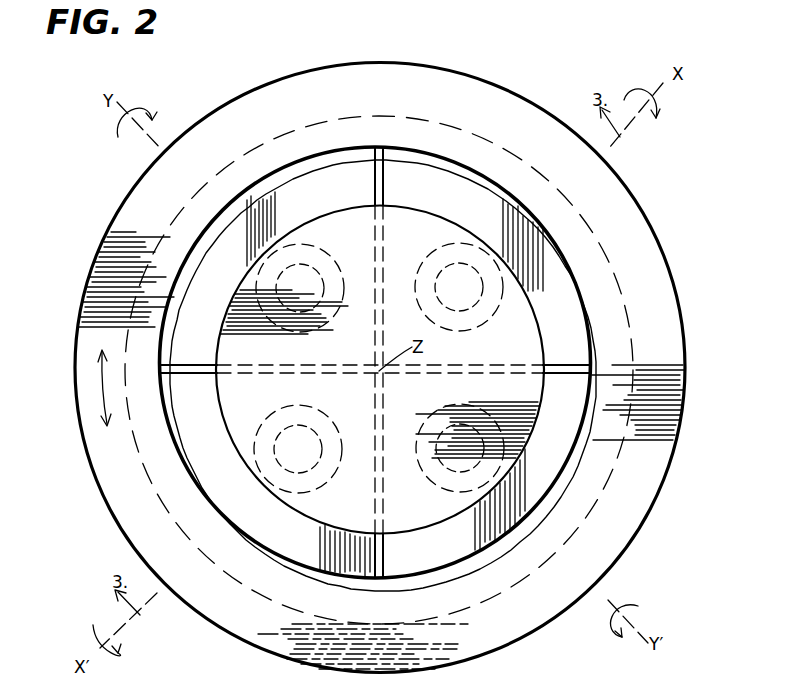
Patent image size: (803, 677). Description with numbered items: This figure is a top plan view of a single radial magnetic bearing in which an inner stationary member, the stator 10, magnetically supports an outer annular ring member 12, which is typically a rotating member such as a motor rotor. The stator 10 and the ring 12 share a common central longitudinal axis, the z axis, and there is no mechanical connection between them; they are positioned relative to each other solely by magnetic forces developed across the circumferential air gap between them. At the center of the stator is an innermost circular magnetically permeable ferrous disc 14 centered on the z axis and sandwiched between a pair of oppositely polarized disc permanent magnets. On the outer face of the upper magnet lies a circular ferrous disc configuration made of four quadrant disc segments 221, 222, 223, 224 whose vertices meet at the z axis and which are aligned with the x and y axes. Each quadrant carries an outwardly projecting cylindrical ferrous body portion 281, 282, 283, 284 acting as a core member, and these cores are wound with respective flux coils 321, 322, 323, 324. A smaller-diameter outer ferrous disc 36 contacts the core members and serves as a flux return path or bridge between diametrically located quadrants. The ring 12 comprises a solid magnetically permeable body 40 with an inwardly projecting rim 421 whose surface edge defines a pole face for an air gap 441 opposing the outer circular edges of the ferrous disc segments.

The stator 10 is at (290, 177).
The outer annular ring member 12 is at (662, 253).
The innermost circular magnetically permeable ferrous disc 14 is at (177, 370).
The quadrant disc segment 221 is at (215, 477).
The quadrant disc segment 222 is at (235, 250).
The quadrant disc segment 223 is at (480, 190).
The quadrant disc segment 224 is at (547, 463).
The cylindrical ferrous body portion 281 is at (282, 428).
The cylindrical ferrous body portion 282 is at (303, 267).
The cylindrical ferrous body portion 283 is at (452, 272).
The cylindrical ferrous body portion 284 is at (462, 433).
The flux coil 321 is at (312, 415).
The flux coil 322 is at (314, 315).
The flux coil 323 is at (478, 315).
The flux coil 324 is at (445, 487).
The outer ferrous disc 36 is at (402, 207).
The solid magnetically permeable body 40 is at (500, 100).
The inwardly projecting rim 421 is at (450, 137).
The air gap 441 is at (379, 148).